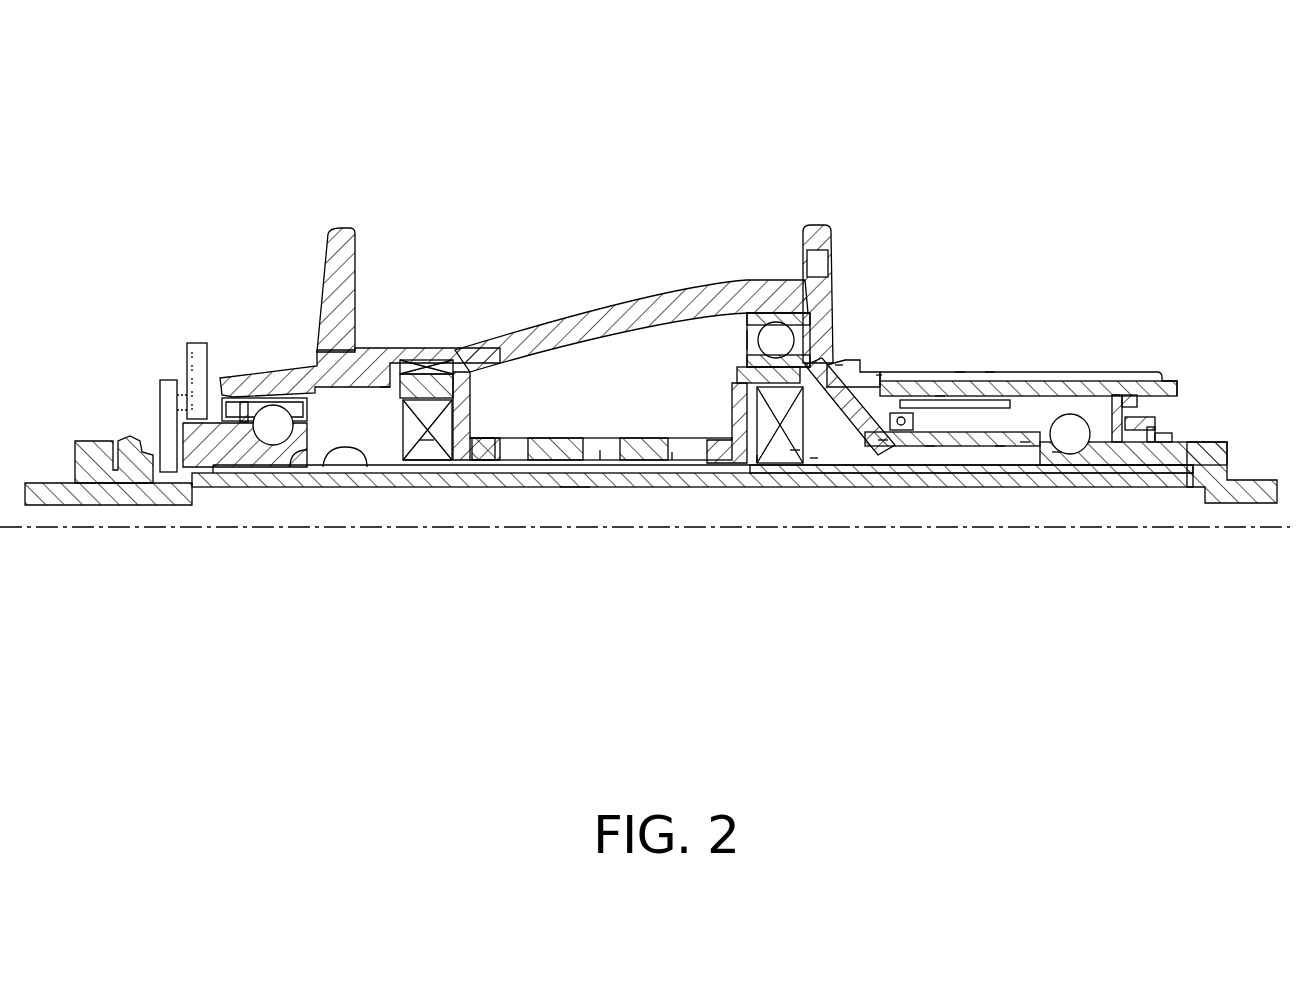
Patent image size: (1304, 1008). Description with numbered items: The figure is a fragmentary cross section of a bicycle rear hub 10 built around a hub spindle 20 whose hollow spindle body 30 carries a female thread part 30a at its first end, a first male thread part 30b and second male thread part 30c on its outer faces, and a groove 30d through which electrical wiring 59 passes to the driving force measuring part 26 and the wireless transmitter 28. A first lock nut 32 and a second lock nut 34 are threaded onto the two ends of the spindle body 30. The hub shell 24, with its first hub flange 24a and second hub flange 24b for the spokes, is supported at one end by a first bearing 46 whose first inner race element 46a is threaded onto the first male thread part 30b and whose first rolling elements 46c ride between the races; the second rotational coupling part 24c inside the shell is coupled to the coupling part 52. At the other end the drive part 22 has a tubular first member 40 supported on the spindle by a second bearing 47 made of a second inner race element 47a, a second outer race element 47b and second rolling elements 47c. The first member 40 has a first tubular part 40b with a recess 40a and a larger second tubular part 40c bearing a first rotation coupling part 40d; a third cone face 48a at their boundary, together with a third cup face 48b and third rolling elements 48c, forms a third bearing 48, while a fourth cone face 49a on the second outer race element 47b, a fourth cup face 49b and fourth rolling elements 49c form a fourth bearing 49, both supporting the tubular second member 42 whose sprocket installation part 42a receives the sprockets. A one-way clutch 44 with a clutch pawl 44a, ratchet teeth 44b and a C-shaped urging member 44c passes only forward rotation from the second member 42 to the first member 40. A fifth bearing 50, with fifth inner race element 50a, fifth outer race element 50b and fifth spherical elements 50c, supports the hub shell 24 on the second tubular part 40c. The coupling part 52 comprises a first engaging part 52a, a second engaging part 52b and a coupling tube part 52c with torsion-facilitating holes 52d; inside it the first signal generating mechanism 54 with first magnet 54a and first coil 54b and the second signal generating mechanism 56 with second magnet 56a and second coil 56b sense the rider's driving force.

The bicycle rear hub 10 is at (555, 220).
The hub spindle 20 is at (528, 452).
The drive part 22 is at (960, 353).
The hub shell 24 is at (537, 328).
The first hub flange 24a is at (340, 228).
The second hub flange 24b is at (820, 225).
The second rotational coupling part 24c is at (393, 350).
The driving force measuring part 26 is at (735, 400).
The wireless transmitter 28 is at (197, 343).
The spindle body 30 is at (597, 447).
The female thread part 30a is at (158, 503).
The first male thread part 30b is at (363, 467).
The second male thread part 30c is at (1083, 442).
The groove 30d is at (575, 488).
The first lock nut 32 is at (103, 440).
The second lock nut 34 is at (1185, 442).
The first member 40 is at (892, 452).
The recess 40a is at (990, 372).
The first tubular part 40b is at (955, 446).
The second tubular part 40c is at (812, 365).
The first rotation coupling part 40d is at (813, 458).
The second member 42 is at (1037, 370).
The sprocket installation part 42a is at (1152, 372).
The one-way clutch 44 is at (893, 385).
The clutch pawl 44a is at (940, 400).
The ratchet teeth 44b is at (928, 446).
The urging member 44c is at (900, 430).
The first bearing 46 is at (267, 385).
The first inner race element 46a is at (245, 488).
The first rolling elements 46c is at (297, 377).
The second bearing 47 is at (1160, 445).
The second inner race element 47a is at (1150, 442).
The second outer race element 47b is at (1025, 442).
The second rolling elements 47c is at (1057, 452).
The third bearing 48 is at (855, 365).
The third cone face 48a is at (883, 440).
The third cup face 48b is at (880, 375).
The third rolling elements 48c is at (838, 362).
The fourth bearing 49 is at (1072, 414).
The fourth cone face 49a is at (1000, 446).
The fourth cup face 49b is at (1050, 392).
The fourth rolling elements 49c is at (1127, 372).
The fifth bearing 50 is at (776, 340).
The fifth inner race element 50a is at (748, 335).
The fifth outer race element 50b is at (783, 318).
The fifth spherical elements 50c is at (753, 313).
The coupling part 52 is at (603, 428).
The first engaging part 52a is at (740, 367).
The second engaging part 52b is at (430, 362).
The coupling tube part 52c is at (622, 428).
The holes 52d is at (678, 460).
The first signal generating mechanism 54 is at (782, 453).
The first magnet 54a is at (758, 455).
The first coil 54b is at (797, 450).
The second signal generating mechanism 56 is at (452, 452).
The second magnet 56a is at (428, 437).
The second coil 56b is at (420, 462).
The electrical wiring 59 is at (600, 460).